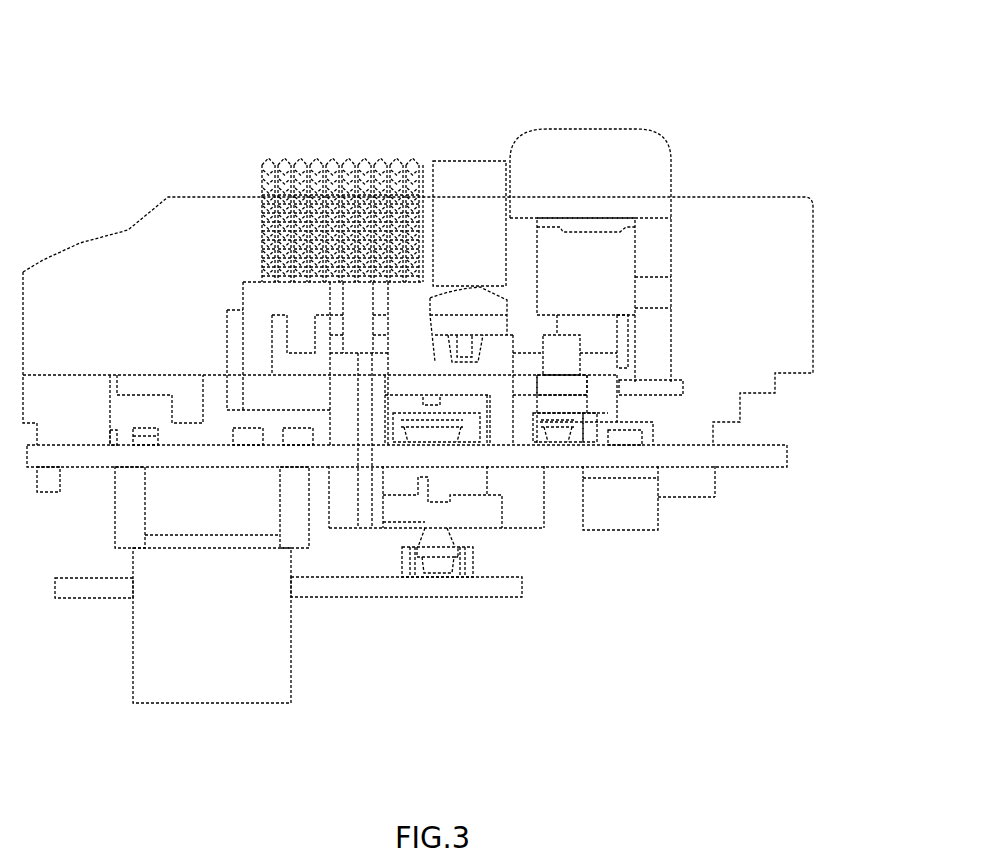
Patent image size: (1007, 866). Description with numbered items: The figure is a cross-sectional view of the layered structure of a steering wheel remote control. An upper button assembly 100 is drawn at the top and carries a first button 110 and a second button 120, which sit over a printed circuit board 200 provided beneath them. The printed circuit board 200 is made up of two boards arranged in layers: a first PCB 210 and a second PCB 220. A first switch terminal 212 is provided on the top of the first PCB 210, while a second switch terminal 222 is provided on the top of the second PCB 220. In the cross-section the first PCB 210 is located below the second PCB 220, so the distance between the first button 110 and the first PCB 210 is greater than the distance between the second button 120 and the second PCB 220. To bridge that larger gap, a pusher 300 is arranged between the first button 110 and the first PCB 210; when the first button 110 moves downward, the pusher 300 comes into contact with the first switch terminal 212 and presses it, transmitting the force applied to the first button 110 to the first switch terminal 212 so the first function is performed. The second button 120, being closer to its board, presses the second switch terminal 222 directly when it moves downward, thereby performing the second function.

The actuator assembly 100 is at (712, 65).
The first button 110 is at (705, 197).
The second button 120 is at (530, 152).
The printed circuit board 200 is at (765, 530).
The first PCB 210 is at (475, 587).
The first switch terminal 212 is at (470, 553).
The second PCB 220 is at (750, 457).
The second switch terminal 222 is at (442, 420).
The pusher 300 is at (347, 515).